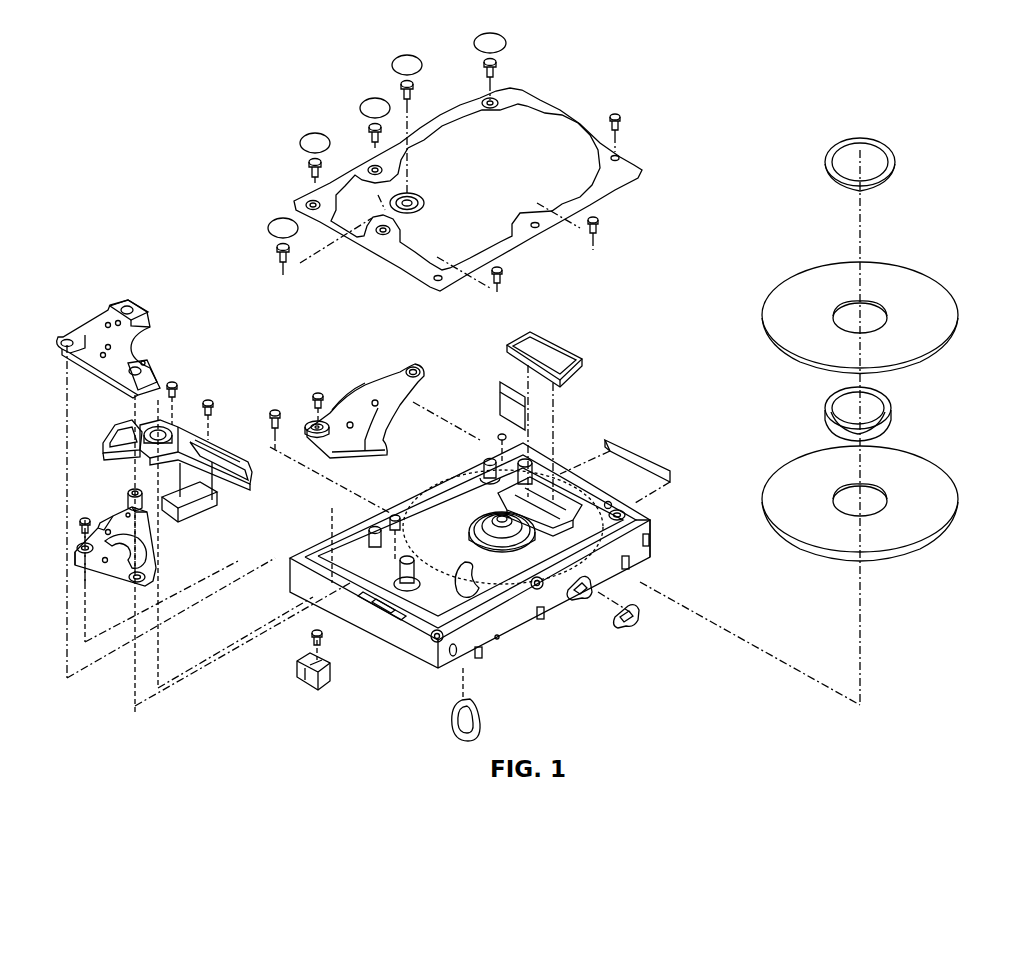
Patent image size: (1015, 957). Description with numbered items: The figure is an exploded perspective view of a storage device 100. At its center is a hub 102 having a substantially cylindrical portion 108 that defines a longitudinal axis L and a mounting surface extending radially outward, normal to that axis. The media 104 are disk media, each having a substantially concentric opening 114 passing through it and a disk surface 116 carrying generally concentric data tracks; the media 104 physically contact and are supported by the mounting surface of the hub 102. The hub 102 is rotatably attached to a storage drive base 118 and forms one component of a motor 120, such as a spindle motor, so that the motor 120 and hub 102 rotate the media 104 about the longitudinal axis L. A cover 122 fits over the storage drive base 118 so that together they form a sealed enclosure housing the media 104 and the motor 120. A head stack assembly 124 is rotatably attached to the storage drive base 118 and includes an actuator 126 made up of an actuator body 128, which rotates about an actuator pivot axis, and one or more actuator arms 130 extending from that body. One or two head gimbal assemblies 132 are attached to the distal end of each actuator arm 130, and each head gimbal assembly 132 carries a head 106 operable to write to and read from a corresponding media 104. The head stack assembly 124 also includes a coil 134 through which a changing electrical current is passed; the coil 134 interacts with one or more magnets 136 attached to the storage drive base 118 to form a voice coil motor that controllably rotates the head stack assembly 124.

The storage device 100 is at (99, 102).
The hub 102 is at (552, 554).
The media 104 is at (763, 313).
The head 106 is at (262, 460).
The substantially cylindrical portion 108 is at (526, 545).
The substantially concentric opening 114 is at (883, 309).
The disk surface 116 is at (938, 307).
The storage drive base 118 is at (653, 572).
The motor 120 is at (474, 498).
The cover 122 is at (622, 196).
The head stack assembly 124 is at (240, 503).
The actuator 126 is at (160, 395).
The actuator body 128 is at (170, 426).
The actuator arm 130 is at (190, 422).
The head gimbal assembly 132 is at (246, 435).
The coil 134 is at (93, 422).
The magnet 136 is at (122, 543).
The longitudinal axis L is at (864, 627).